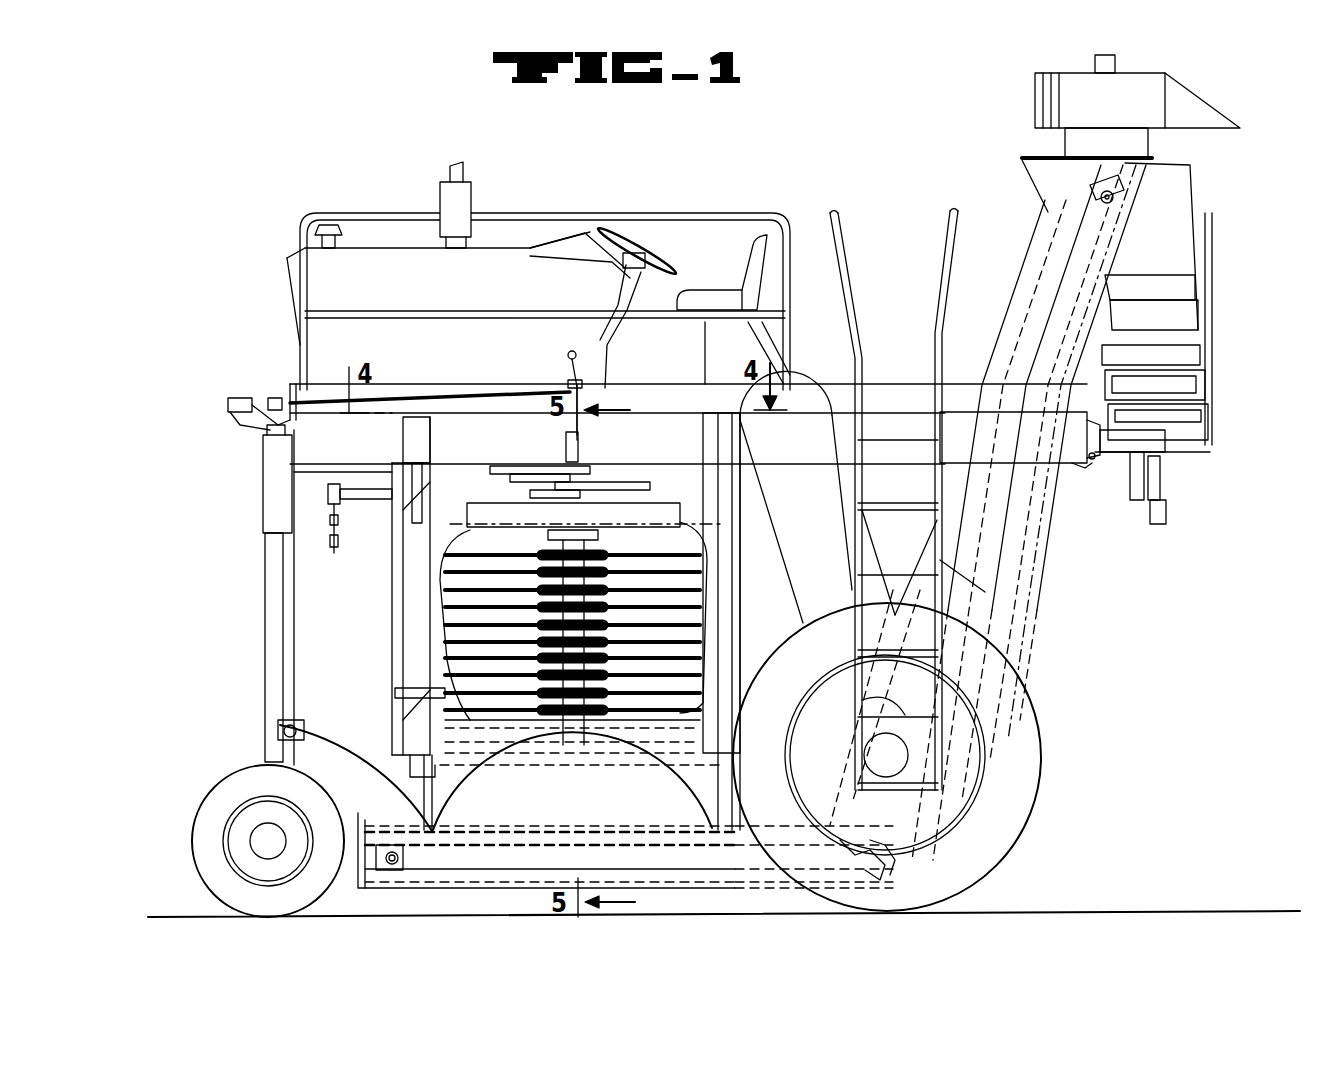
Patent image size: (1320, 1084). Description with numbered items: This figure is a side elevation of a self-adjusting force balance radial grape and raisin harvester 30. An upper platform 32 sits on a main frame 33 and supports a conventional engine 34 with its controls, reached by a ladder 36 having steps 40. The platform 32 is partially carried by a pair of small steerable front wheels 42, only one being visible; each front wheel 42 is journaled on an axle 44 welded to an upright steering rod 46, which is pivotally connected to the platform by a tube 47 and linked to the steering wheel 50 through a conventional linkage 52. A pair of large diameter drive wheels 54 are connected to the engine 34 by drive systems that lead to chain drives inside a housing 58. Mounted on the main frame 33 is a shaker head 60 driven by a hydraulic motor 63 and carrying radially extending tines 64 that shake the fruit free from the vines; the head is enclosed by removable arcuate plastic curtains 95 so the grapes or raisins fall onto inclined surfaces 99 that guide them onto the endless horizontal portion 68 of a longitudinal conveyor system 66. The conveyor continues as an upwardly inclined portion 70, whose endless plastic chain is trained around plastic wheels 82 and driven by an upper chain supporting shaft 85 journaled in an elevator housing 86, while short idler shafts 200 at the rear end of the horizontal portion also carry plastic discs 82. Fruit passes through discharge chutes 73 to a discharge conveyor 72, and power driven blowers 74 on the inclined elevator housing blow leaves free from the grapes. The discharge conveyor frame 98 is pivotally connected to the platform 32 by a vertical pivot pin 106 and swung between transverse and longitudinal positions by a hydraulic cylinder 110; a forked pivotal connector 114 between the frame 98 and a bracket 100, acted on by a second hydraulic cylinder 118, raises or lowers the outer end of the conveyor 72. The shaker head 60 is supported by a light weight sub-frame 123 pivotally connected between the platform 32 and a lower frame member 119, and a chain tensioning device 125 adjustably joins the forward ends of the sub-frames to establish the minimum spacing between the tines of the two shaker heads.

The self-adjusting force balance radial grape and raisin harvester 30 is at (357, 176).
The upper platform 32 is at (632, 428).
The main frame 33 is at (476, 415).
The engine 34 is at (440, 294).
The ladder 36 is at (945, 256).
The steps 40 is at (892, 568).
The front wheels 42 is at (250, 775).
The axle 44 is at (258, 842).
The steering rods 46 is at (272, 413).
The tubes 47 is at (268, 518).
The steering wheel 50 is at (657, 253).
The linkage 52 is at (560, 380).
The drive wheels 54 is at (1025, 723).
The housings 58 is at (812, 476).
The shaker head 60 is at (620, 478).
The hydraulic motor 63 is at (560, 447).
The tines 64 is at (700, 560).
The longitudinal conveyor system 66 is at (618, 815).
The endless horizontal portion 68 is at (545, 828).
The upwardly inclined portion 70 is at (1035, 292).
The discharge conveyor 72 is at (1218, 390).
The discharge chutes 73 is at (1188, 290).
The power driven blowers 74 is at (1040, 100).
The plastic wheels 82 is at (403, 858).
The upper chain supporting shaft 85 is at (1100, 197).
The elevator housing 86 is at (1047, 226).
The arcuate plastic curtains 95 is at (440, 694).
The discharge conveyor frame 98 is at (1200, 353).
The inclined surfaces 99 is at (660, 750).
The bracket 100 is at (1110, 462).
The vertical pivot pin 106 is at (1087, 466).
The hydraulic cylinder 110 is at (1160, 448).
The forked pivotal connector 114 is at (1178, 508).
The hydraulic cylinder 118 is at (1132, 488).
The lower frame member 119 is at (436, 772).
The sub-frame 123 is at (393, 460).
The chain tensioning device 125 is at (325, 540).
The idler shafts 200 is at (395, 870).